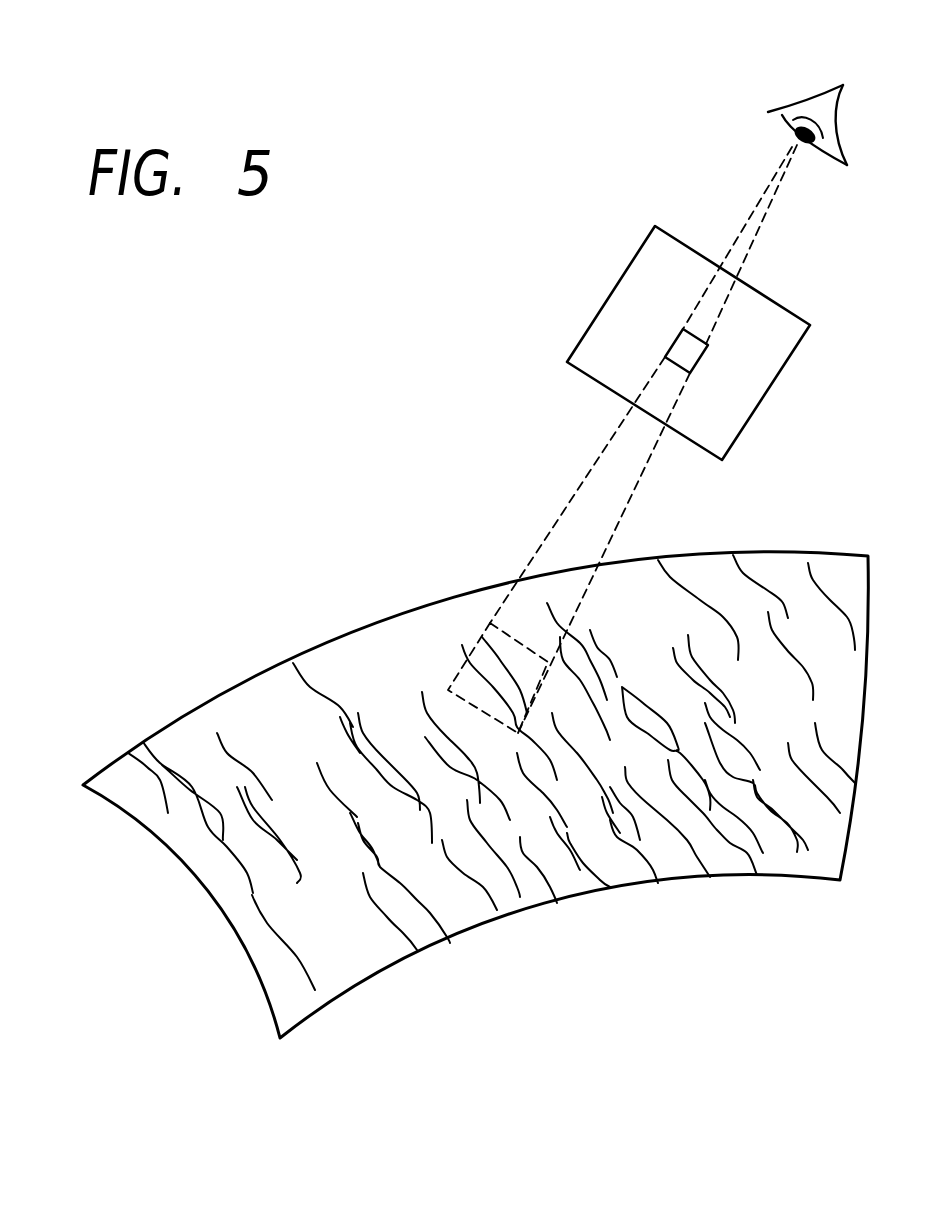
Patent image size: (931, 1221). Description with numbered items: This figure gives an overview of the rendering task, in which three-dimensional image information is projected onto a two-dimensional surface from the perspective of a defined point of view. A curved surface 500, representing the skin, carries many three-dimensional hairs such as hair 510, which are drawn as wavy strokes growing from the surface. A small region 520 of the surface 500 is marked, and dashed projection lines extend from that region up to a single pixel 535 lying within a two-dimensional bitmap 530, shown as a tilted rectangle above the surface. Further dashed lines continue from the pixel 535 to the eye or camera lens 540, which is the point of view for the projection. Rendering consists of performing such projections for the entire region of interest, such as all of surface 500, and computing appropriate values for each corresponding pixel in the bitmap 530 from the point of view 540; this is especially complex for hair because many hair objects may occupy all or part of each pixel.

The surface 500 is at (233, 620).
The hair 510 is at (263, 952).
The region 520 is at (480, 637).
The two-dimensional bitmap 530 is at (612, 274).
The pixel 535 is at (760, 369).
The eye or camera lens 540 is at (828, 88).